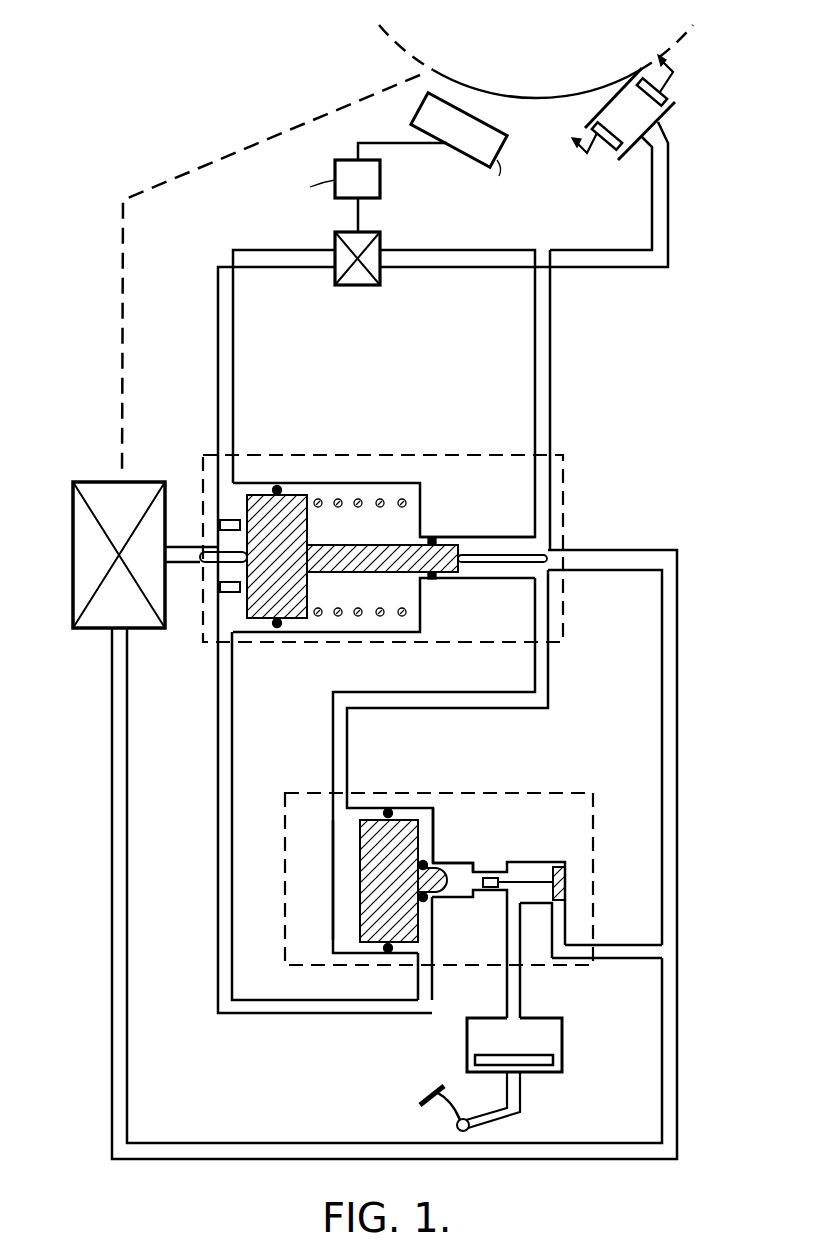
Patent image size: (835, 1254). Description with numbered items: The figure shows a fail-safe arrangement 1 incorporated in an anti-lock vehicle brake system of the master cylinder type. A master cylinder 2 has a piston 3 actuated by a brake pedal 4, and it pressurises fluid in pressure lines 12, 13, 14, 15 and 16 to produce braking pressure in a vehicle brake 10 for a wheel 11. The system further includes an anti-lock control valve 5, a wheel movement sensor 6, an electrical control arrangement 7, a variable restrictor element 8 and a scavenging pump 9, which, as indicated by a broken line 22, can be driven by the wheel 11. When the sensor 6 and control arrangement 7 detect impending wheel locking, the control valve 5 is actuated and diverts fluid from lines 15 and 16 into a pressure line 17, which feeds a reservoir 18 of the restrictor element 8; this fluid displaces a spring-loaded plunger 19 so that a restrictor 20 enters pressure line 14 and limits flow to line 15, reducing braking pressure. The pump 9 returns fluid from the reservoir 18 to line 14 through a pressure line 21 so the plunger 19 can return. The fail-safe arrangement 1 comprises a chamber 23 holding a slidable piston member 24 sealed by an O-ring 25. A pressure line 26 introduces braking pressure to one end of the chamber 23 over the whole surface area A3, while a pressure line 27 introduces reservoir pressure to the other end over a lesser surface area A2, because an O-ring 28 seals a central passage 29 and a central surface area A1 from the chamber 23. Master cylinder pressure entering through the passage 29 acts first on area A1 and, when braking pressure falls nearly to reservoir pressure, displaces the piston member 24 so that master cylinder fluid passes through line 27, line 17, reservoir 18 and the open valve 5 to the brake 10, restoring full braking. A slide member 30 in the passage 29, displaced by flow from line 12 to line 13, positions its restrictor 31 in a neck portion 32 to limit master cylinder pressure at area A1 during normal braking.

The fail-safe arrangement 1 is at (523, 833).
The master cylinder 2 is at (562, 1035).
The piston 3 is at (535, 1060).
The brake pedal 4 is at (428, 1092).
The anti-lock control valve 5 is at (372, 230).
The wheel movement sensor 6 is at (472, 142).
The electrical control arrangement 7 is at (380, 178).
The variable restrictor element 8 is at (487, 497).
The scavenging pump 9 is at (125, 500).
The vehicle brake 10 is at (647, 110).
The wheel 11 is at (551, 100).
The pressure line 12 is at (521, 990).
The pressure line 13 is at (618, 945).
The pressure line 14 is at (666, 753).
The pressure line 15 is at (543, 385).
The pressure line 16 is at (669, 217).
The pressure line 17 is at (232, 378).
The reservoir 18 is at (235, 508).
The spring-loaded plunger 19 is at (297, 520).
The restrictor 20 is at (498, 558).
The pressure line 21 is at (128, 1057).
The broken line 22 is at (188, 170).
The chamber 23 is at (370, 815).
The piston member 24 is at (397, 830).
The O-ring 25 is at (388, 955).
The pressure line 26 is at (457, 702).
The pressure line 27 is at (332, 1008).
The O-ring 28 is at (427, 903).
The central passage 29 is at (460, 871).
The slide member 30 is at (523, 880).
The restrictor 31 is at (488, 877).
The neck portion 32 is at (488, 889).
The central surface area A1 is at (442, 894).
The lesser surface area A2 is at (418, 833).
The whole surface area A3 is at (358, 875).